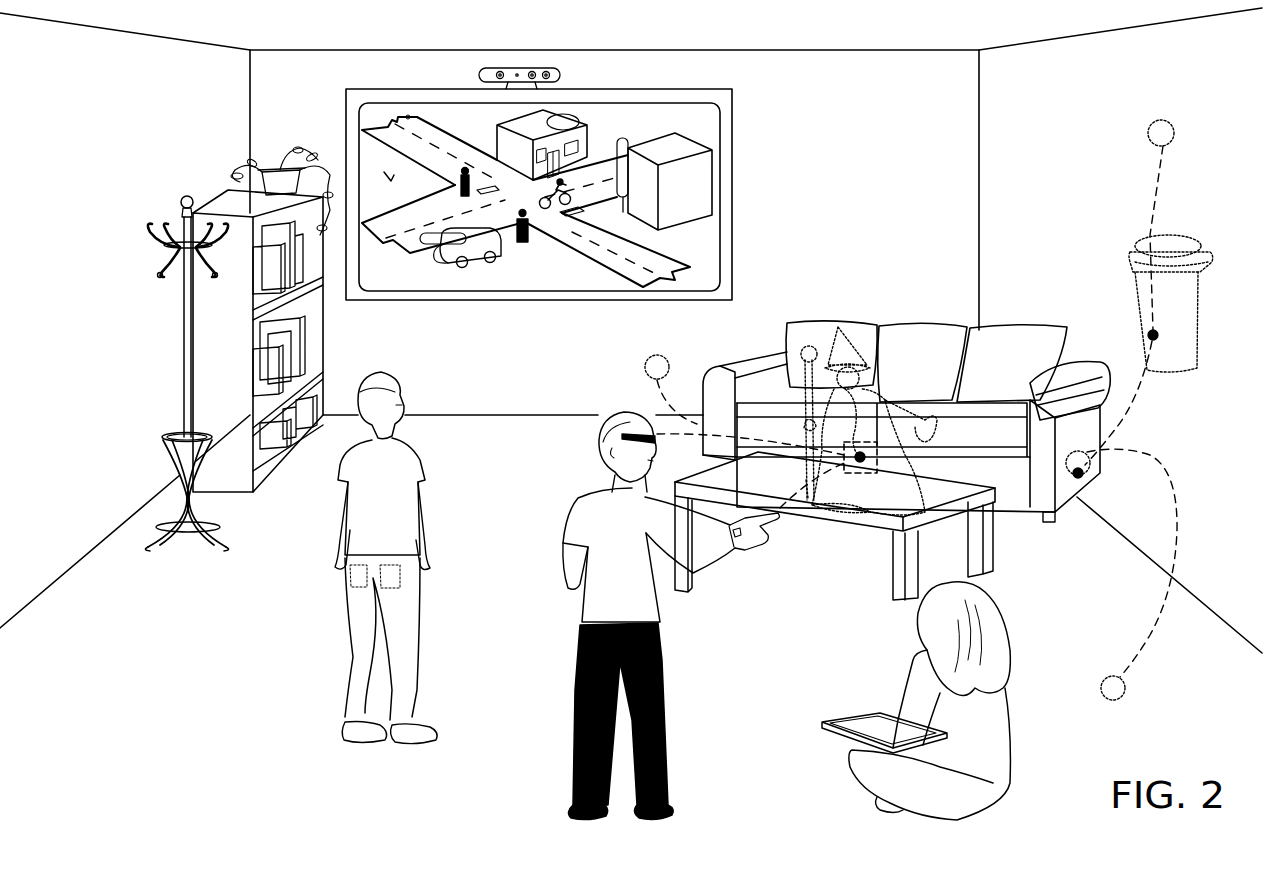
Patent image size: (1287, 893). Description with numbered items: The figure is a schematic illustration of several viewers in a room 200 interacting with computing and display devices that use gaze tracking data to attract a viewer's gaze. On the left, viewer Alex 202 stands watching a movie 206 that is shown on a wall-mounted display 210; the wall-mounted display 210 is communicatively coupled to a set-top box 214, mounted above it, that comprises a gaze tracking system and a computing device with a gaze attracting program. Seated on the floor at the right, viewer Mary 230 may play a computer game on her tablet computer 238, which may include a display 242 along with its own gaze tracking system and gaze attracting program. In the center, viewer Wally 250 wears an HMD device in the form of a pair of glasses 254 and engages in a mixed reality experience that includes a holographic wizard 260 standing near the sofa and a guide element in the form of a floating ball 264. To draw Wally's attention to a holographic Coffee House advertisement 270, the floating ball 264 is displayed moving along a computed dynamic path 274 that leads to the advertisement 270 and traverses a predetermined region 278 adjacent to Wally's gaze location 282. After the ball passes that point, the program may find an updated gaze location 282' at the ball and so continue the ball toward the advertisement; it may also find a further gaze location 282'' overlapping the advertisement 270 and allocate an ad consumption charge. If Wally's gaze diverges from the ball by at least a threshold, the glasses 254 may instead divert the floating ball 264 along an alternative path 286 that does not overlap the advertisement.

The room 200 is at (800, 42).
The viewer Alex 202 is at (338, 522).
The movie 206 is at (463, 103).
The wall-mounted display 210 is at (383, 88).
The set-top box 214 is at (519, 68).
The viewer Mary 230 is at (1012, 700).
The tablet computer 238 is at (869, 733).
The display 242 is at (858, 722).
The viewer Wally 250 is at (576, 689).
The glasses 254 is at (636, 432).
The holographic wizard 260 is at (864, 503).
The floating ball 264 is at (660, 353).
The Coffee House advertisement 270 is at (1200, 232).
The computed dynamic path 274 is at (1168, 401).
The predetermined region 278 is at (813, 462).
The gaze location 282 is at (896, 460).
The updated gaze location 282' is at (1106, 484).
The gaze location 282'' is at (1116, 323).
The alternative path 286 is at (1160, 626).